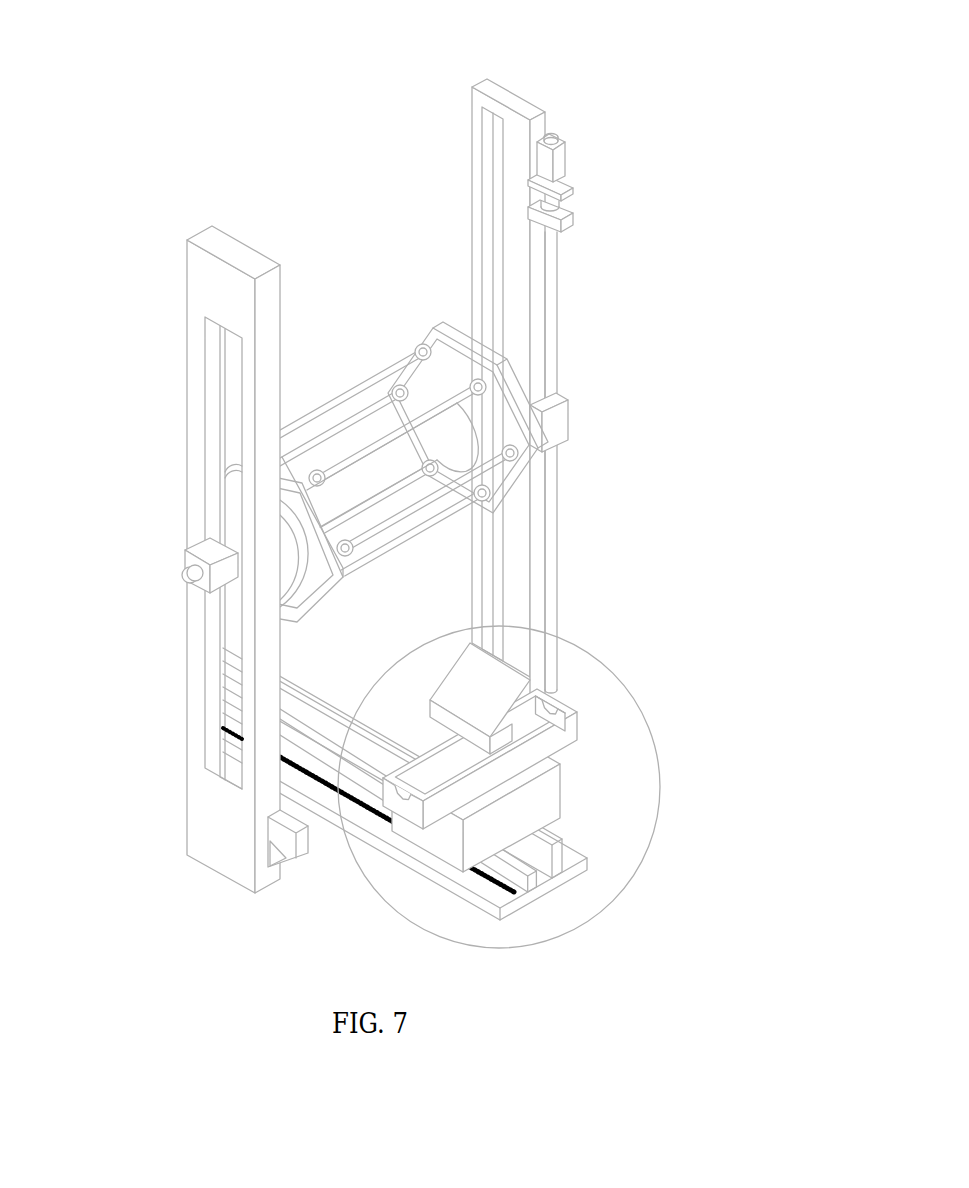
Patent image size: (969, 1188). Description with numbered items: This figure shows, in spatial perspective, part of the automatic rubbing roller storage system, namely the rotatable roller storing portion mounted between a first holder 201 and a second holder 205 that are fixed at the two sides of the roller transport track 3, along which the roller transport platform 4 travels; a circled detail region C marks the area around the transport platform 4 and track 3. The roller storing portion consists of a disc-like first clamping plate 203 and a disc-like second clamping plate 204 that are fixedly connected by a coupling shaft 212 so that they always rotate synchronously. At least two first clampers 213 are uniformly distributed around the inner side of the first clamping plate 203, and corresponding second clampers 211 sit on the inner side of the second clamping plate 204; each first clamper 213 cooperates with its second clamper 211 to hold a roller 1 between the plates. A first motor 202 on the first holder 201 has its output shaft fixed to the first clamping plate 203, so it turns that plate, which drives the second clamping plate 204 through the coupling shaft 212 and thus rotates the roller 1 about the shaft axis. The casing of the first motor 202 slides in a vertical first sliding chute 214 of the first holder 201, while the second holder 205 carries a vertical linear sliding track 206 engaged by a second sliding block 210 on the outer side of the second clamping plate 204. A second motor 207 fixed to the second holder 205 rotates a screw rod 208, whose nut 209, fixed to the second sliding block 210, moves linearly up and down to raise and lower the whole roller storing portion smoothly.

The roller 1 is at (345, 388).
The roller transport track 3 is at (328, 817).
The roller transport platform 4 is at (493, 830).
The detail region C is at (392, 913).
The first holder 201 is at (195, 713).
The first motor 202 is at (202, 587).
The first clamping plate 203 is at (237, 467).
The second clamping plate 204 is at (453, 375).
The second holder 205 is at (477, 182).
The sliding track 206 is at (497, 125).
The second motor 207 is at (560, 160).
The screw rod 208 is at (553, 330).
The nut 209 is at (558, 400).
The second sliding block 210 is at (548, 435).
The second clamper 211 is at (518, 456).
The coupling shaft 212 is at (445, 440).
The first clamper 213 is at (347, 550).
The first sliding chute 214 is at (225, 768).